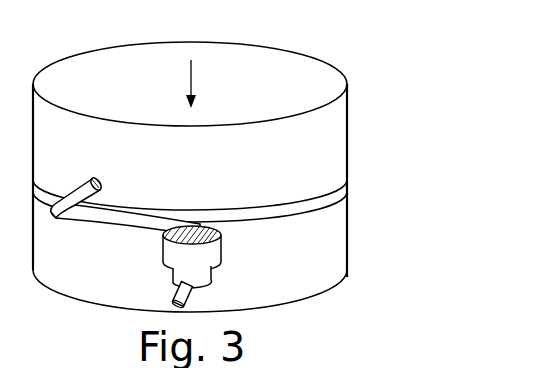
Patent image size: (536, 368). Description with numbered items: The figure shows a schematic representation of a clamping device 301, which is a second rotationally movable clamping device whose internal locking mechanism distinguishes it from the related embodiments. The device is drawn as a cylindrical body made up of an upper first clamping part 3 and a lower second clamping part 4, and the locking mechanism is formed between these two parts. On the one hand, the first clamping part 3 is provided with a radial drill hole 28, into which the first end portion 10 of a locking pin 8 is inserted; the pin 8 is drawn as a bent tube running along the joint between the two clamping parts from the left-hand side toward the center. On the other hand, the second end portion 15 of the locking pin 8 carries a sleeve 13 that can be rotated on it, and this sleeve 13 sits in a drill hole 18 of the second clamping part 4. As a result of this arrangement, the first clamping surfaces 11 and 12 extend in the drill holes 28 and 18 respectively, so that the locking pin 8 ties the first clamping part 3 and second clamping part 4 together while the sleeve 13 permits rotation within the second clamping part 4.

The clamping device 301 is at (391, 63).
The first clamping part 3 is at (338, 136).
The second clamping part 4 is at (338, 234).
The locking pin 8 is at (120, 223).
The first end portion 10 is at (67, 185).
The radial drill hole 28 is at (92, 182).
The first clamping surface 11 is at (123, 162).
The drill hole 18 is at (201, 230).
The first clamping surface 12 is at (225, 196).
The sleeve 13 is at (217, 269).
The second end portion 15 is at (193, 286).